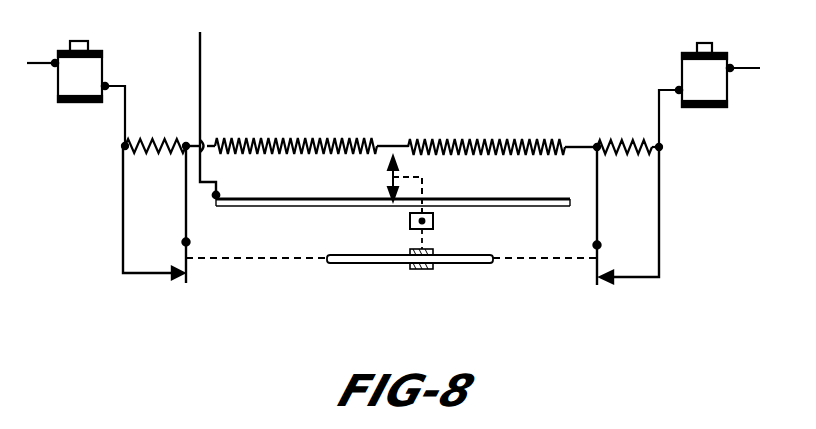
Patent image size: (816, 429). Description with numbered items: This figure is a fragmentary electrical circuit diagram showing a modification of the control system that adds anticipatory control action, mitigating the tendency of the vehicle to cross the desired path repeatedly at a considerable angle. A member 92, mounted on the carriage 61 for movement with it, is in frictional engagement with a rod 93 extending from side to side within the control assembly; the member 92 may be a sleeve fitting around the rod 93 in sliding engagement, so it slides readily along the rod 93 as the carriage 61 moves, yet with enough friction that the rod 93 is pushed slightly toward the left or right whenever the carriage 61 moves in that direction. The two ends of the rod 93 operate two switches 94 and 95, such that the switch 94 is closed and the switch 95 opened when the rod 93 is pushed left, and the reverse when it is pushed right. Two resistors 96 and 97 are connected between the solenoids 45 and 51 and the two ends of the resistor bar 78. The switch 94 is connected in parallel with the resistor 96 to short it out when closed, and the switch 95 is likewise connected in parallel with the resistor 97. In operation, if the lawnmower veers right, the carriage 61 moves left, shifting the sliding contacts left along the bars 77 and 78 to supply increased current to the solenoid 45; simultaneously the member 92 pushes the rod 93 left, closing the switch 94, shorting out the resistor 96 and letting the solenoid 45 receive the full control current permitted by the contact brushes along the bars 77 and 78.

The solenoid 45 is at (82, 42).
The solenoid 51 is at (682, 62).
The carriage 61 is at (433, 222).
The bar 77 is at (310, 188).
The resistor bar 78 is at (297, 136).
The member 92 is at (418, 270).
The rod 93 is at (370, 253).
The switch 94 is at (185, 257).
The switch 95 is at (603, 256).
The resistor 96 is at (166, 137).
The resistor 97 is at (632, 140).